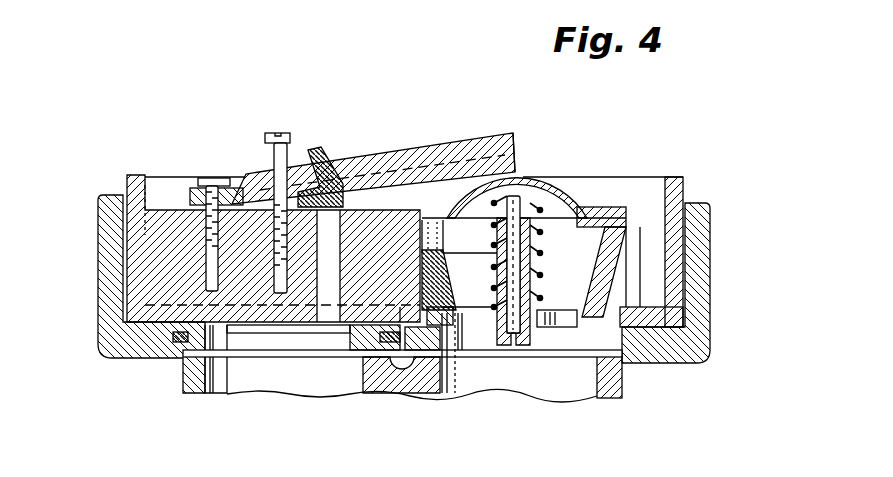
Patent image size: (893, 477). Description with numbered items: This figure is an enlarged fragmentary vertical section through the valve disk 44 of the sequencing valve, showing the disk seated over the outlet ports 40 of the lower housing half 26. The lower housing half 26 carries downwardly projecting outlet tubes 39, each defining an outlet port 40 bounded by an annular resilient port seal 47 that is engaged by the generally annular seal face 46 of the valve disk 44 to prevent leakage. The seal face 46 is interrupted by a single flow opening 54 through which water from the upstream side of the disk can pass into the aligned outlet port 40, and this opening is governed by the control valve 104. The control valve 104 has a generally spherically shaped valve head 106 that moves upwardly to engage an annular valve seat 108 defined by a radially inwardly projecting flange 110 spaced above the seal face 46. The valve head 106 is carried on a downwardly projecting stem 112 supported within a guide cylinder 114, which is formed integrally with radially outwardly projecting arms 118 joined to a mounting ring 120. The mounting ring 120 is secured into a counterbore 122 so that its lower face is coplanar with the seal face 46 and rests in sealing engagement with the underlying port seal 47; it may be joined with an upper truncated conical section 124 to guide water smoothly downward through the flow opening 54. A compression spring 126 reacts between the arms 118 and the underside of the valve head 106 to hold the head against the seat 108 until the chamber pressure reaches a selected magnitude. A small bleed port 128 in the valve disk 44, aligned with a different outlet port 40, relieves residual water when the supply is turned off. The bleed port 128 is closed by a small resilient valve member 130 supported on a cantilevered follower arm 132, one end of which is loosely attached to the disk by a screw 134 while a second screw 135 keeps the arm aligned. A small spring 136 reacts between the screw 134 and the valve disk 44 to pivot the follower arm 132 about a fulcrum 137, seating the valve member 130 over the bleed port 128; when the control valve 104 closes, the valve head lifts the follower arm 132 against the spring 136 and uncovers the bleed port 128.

The lower housing half 26 is at (107, 319).
The outlet tube 39 is at (190, 382).
The outlet port 40 is at (360, 385).
The valve disk 44 is at (161, 178).
The seal face 46 is at (259, 340).
The port seal 47 is at (620, 376).
The flow opening 54 is at (553, 368).
The control valve 104 is at (596, 162).
The valve head 106 is at (582, 200).
The valve seat 108 is at (590, 212).
The flange 110 is at (645, 230).
The stem 112 is at (525, 248).
The guide cylinder 114 is at (492, 278).
The arm 118 is at (487, 318).
The mounting ring 120 is at (683, 320).
The counterbore 122 is at (418, 295).
The upper truncated conical section 124 is at (655, 287).
The compression spring 126 is at (533, 278).
The bleed port 128 is at (315, 316).
The valve member 130 is at (446, 149).
The follower arm 132 is at (484, 165).
The screw 134 is at (202, 178).
The second screw 135 is at (290, 140).
The spring 136 is at (125, 253).
The fulcrum 137 is at (244, 235).